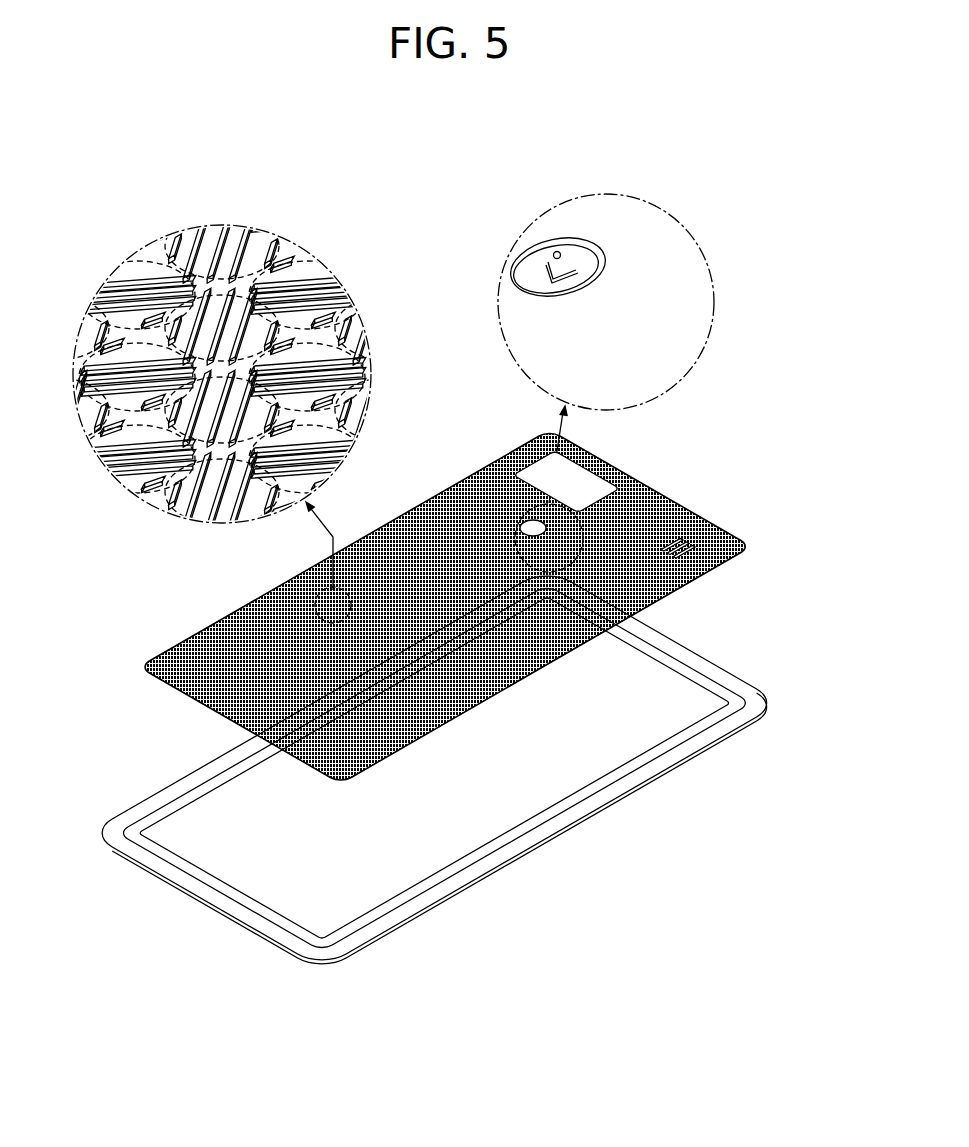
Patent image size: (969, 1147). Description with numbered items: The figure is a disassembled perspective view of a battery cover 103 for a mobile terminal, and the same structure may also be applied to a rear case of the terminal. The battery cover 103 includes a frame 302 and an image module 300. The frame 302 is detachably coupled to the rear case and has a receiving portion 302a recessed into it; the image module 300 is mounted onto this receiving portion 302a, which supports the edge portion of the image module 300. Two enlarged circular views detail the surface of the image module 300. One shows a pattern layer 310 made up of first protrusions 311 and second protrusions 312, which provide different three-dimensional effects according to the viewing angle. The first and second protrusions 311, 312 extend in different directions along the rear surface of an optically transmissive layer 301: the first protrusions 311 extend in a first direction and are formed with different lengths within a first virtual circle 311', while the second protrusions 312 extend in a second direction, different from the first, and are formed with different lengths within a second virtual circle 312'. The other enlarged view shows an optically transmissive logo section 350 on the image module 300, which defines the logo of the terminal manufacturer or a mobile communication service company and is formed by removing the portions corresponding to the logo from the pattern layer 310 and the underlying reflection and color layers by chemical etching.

The battery cover 103 is at (460, 588).
The image module 300 is at (750, 546).
The optically transmissive layer 301 is at (318, 432).
The frame 302 is at (742, 688).
The receiving portion 302a is at (692, 728).
The pattern layer 310 is at (244, 374).
The first protrusions 311 is at (260, 456).
The second protrusions 312 is at (260, 251).
The first virtual circle 311' is at (266, 418).
The second virtual circle 312' is at (240, 286).
The logo section 350 is at (697, 333).